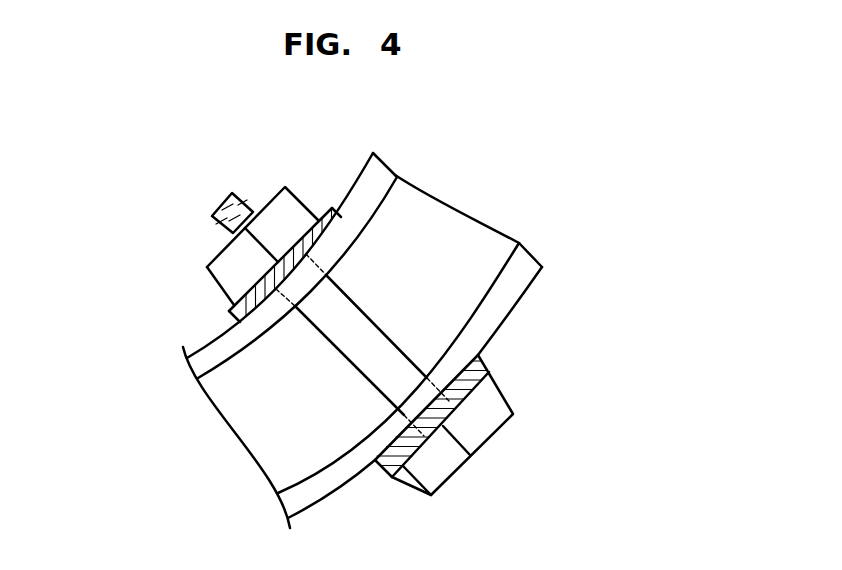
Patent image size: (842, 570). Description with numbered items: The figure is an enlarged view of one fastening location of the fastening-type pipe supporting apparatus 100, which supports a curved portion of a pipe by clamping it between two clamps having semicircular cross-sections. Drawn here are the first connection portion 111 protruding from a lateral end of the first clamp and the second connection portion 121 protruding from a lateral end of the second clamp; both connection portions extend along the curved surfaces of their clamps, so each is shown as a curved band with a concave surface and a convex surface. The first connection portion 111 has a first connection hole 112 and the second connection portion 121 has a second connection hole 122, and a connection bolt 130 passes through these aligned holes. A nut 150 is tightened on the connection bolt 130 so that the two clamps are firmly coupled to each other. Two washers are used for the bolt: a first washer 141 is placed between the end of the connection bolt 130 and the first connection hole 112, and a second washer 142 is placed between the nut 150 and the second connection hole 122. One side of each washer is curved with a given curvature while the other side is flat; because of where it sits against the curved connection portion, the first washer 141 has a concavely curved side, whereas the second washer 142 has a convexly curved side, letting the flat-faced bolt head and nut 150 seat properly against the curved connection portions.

The fastening-type pipe supporting apparatus 100 is at (167, 196).
The first connection portion 111 is at (528, 278).
The first connection hole 112 is at (442, 394).
The second connection portion 121 is at (381, 188).
The second connection hole 122 is at (268, 298).
The connection bolt 130 is at (455, 462).
The first washer 141 is at (389, 465).
The second washer 142 is at (236, 319).
The nut 150 is at (218, 266).